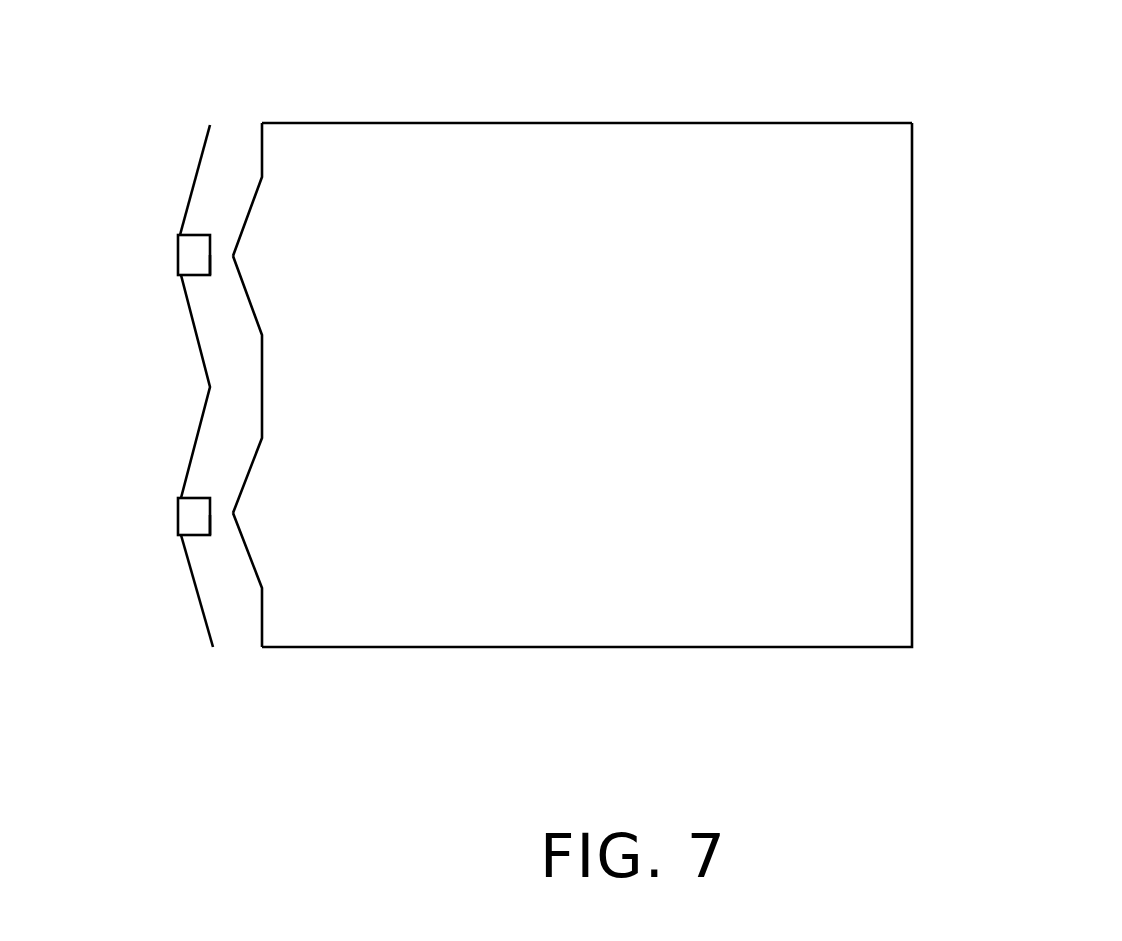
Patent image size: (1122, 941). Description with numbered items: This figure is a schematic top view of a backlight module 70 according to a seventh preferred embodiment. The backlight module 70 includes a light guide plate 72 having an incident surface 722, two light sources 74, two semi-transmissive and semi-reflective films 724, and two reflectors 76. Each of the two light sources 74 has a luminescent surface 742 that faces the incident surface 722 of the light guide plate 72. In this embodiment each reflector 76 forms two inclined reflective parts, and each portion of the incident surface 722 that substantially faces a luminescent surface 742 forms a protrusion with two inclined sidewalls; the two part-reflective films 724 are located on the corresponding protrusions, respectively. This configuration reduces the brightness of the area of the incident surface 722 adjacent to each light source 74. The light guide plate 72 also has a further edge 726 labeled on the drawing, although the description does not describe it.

The backlight module 70 is at (480, 79).
The light guide plate 72 is at (570, 389).
The incident surface 722 is at (262, 137).
The semi-transmissive and semi-reflective film 724 is at (253, 574).
The top side 726 is at (817, 122).
The light source 74 is at (193, 257).
The luminescent surface 742 is at (222, 273).
The reflector 76 is at (190, 193).